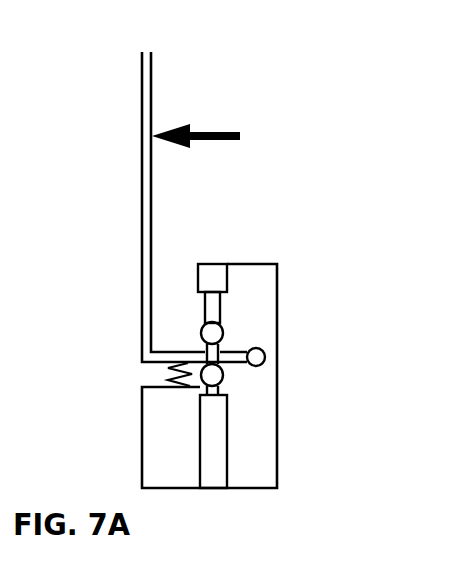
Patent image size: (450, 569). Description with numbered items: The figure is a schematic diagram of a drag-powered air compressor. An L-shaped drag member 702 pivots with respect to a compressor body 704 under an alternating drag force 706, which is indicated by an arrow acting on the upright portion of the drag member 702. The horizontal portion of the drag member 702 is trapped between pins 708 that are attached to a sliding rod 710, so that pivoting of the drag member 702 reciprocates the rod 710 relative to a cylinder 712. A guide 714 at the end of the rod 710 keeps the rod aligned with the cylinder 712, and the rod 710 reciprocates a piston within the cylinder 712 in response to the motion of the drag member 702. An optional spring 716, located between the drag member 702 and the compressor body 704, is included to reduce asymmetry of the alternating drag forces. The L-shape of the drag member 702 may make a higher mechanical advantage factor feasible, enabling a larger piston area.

The drag member 702 is at (155, 77).
The compressor body 704 is at (279, 381).
The drag force 706 is at (199, 124).
The pins 708 is at (223, 372).
The sliding rod 710 is at (221, 304).
The cylinder 712 is at (221, 431).
The guide 714 is at (224, 272).
The spring 716 is at (181, 380).